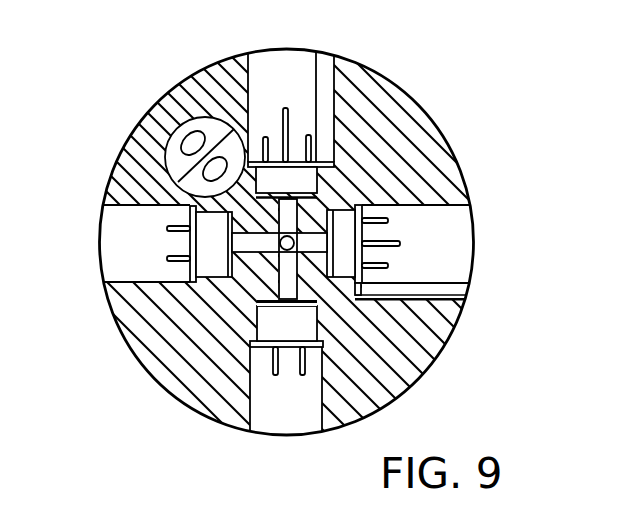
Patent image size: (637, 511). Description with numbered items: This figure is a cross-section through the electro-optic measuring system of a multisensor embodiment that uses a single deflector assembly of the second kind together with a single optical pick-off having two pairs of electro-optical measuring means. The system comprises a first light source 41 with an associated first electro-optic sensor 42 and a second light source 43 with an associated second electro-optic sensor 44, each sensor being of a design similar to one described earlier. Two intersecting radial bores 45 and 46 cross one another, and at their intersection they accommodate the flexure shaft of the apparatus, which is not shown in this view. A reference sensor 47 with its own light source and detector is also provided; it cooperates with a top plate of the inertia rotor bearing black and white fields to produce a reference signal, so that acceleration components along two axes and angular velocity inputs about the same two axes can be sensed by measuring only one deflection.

The first light source 41 is at (299, 157).
The first electro-optic sensor 42 is at (270, 348).
The second light source 43 is at (463, 248).
The second electro-optic sensor 44 is at (112, 230).
The radial bore 45 is at (289, 216).
The radial bore 46 is at (298, 267).
The reference sensor 47 is at (207, 124).